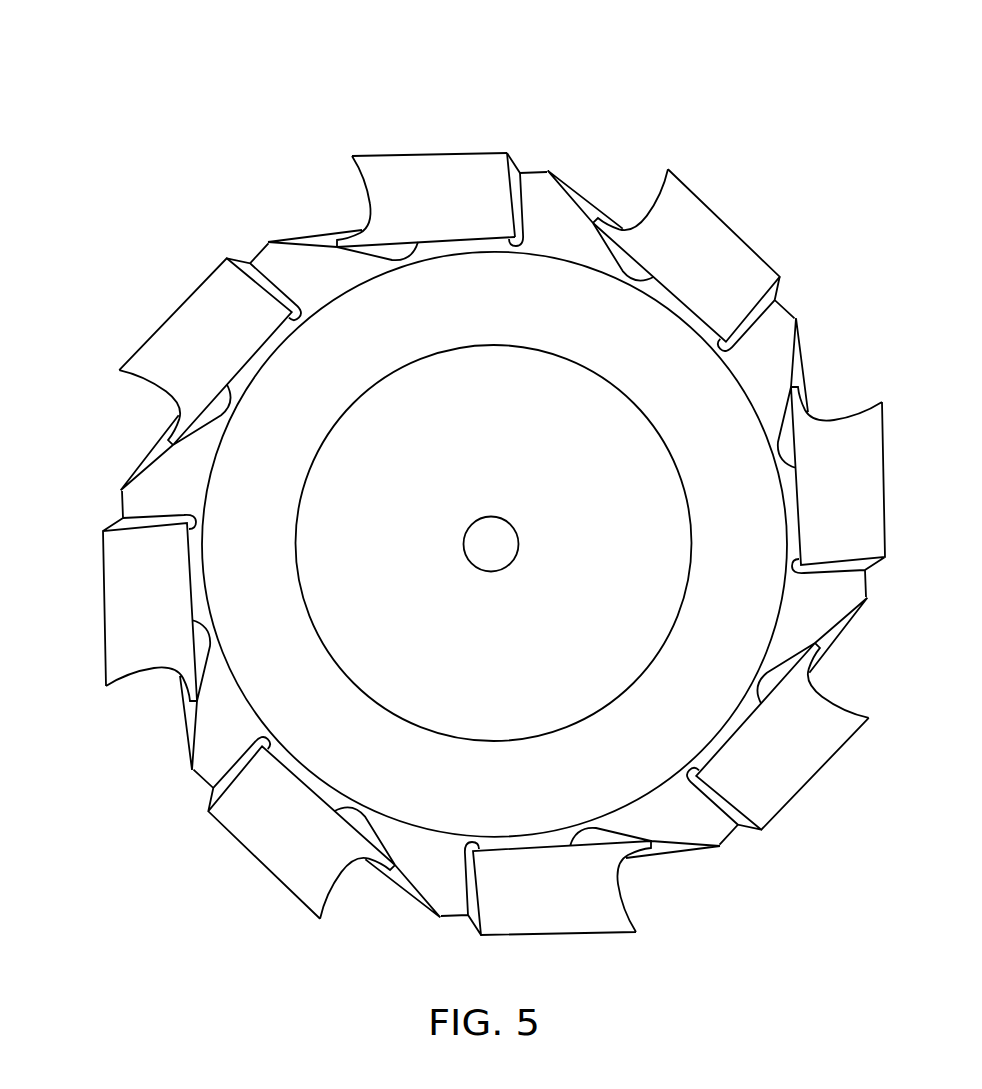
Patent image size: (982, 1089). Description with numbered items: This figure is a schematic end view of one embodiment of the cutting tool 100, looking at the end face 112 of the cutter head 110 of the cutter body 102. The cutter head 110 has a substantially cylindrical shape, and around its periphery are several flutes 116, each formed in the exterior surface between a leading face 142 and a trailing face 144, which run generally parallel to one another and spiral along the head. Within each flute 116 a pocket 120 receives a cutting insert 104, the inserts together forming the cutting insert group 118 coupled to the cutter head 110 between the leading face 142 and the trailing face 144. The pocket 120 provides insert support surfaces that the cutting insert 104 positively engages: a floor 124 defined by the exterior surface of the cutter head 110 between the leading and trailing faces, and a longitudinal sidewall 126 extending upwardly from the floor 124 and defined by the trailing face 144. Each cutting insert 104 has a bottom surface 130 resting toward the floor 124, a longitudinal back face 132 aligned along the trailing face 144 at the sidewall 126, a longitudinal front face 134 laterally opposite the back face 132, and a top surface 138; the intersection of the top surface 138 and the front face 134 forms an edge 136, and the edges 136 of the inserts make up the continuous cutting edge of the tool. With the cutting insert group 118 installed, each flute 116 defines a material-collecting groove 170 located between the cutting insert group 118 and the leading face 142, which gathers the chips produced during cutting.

The cutting tool 100 is at (160, 128).
The cutter body 102 is at (127, 272).
The cutting insert 104 is at (400, 152).
The cutter head 110 is at (105, 442).
The end face 112 is at (829, 607).
The flute 116 is at (275, 168).
The cutting insert group 118 is at (430, 103).
The pocket 120 is at (484, 241).
The floor 124 is at (413, 250).
The longitudinal sidewall 126 is at (525, 226).
The bottom surface 130 is at (437, 240).
The longitudinal back face 132 is at (510, 192).
The longitudinal front face 134 is at (365, 185).
The edge 136 is at (358, 162).
The top surface 138 is at (456, 152).
The leading face 142 is at (572, 183).
The trailing face 144 is at (538, 172).
The groove 170 is at (618, 182).